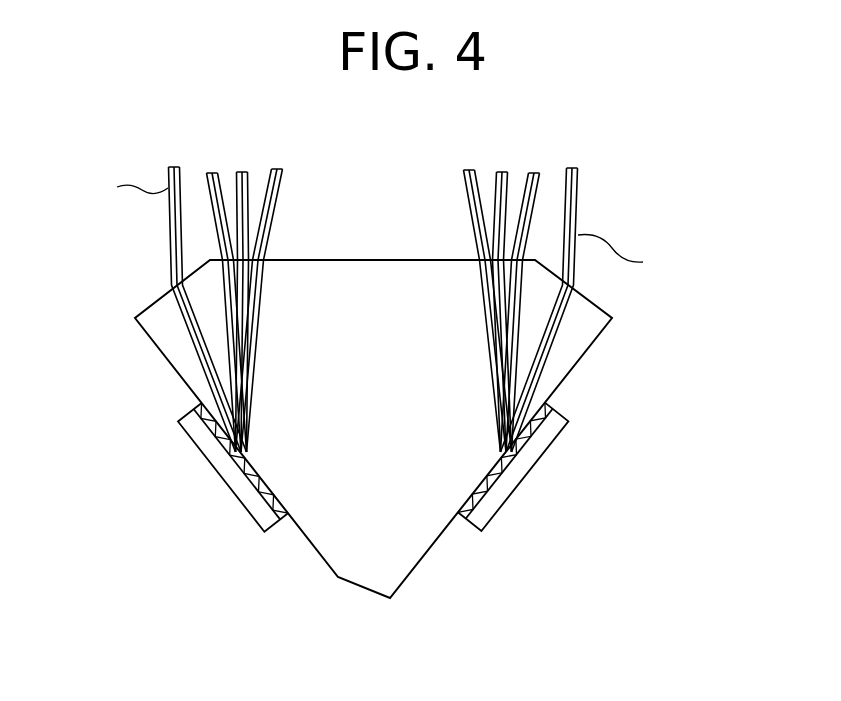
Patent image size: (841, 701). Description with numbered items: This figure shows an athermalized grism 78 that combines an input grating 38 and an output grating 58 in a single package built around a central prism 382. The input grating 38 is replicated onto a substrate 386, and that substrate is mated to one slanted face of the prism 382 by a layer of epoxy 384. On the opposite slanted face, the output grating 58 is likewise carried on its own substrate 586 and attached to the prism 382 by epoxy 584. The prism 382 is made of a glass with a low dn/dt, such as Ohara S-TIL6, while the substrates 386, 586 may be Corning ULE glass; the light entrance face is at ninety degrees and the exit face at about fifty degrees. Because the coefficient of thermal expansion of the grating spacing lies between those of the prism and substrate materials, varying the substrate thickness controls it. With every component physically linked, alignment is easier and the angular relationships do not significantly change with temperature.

The athermalized grism 78 is at (657, 180).
The prism 382 is at (328, 523).
The input grating 38 is at (233, 470).
The epoxy 384 is at (198, 407).
The substrate 386 is at (197, 428).
The output grating 58 is at (523, 473).
The epoxy 584 is at (550, 403).
The substrate 586 is at (492, 510).